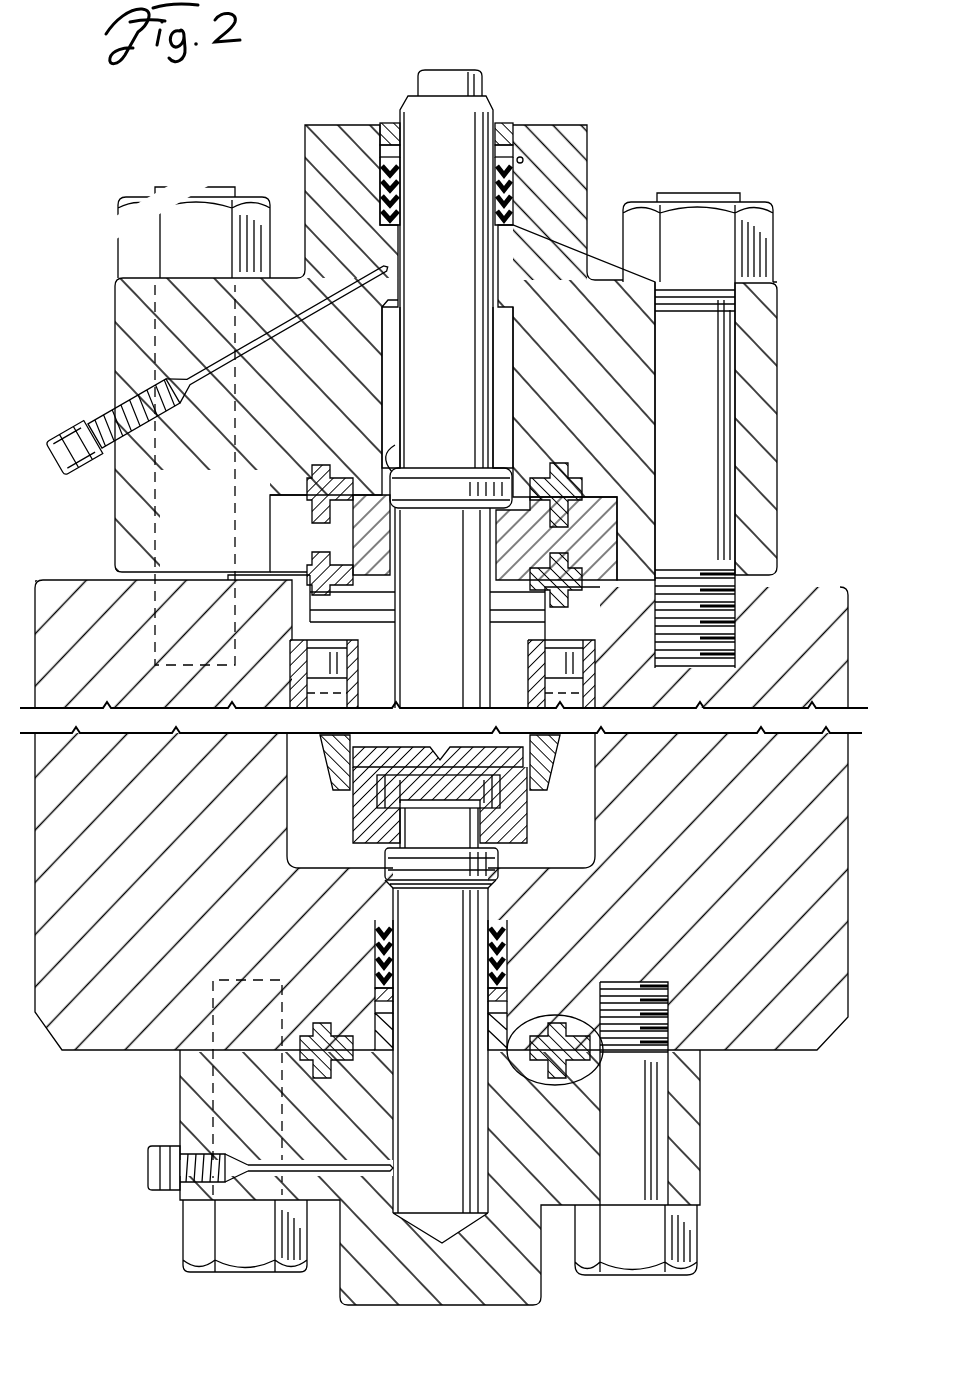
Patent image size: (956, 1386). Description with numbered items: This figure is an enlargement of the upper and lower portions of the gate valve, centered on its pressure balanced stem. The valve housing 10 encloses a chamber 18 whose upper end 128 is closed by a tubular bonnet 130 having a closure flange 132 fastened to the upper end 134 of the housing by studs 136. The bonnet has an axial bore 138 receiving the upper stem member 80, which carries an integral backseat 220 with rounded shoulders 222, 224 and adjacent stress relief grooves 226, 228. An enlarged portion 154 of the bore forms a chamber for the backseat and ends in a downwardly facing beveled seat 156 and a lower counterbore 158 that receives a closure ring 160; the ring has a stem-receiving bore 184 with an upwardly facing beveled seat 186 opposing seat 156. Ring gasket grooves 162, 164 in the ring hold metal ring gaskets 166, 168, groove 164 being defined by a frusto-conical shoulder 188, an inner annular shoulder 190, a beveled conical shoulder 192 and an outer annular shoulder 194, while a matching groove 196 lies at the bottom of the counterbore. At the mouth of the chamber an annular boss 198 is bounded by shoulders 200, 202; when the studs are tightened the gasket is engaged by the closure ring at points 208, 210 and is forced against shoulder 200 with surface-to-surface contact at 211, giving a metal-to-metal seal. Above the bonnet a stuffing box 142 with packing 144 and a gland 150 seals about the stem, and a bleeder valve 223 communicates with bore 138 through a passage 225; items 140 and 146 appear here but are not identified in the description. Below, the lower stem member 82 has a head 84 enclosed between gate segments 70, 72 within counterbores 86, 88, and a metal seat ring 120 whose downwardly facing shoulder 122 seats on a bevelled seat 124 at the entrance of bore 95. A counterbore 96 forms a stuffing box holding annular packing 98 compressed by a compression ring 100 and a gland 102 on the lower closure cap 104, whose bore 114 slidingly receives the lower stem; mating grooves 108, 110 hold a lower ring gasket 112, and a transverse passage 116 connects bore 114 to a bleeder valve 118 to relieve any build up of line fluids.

The valve housing 10 is at (590, 130).
The chamber 18 is at (594, 692).
The gate segment 70 is at (352, 822).
The gate segment 72 is at (518, 768).
The upper stem member 80 is at (455, 205).
The lower stem member 82 is at (455, 1118).
The head 84 is at (498, 790).
The counterbore 86 is at (488, 815).
The counterbore 88 is at (388, 792).
The bore 95 is at (398, 898).
The counterbore 96 is at (388, 1012).
The annular packing 98 is at (385, 942).
The compression ring 100 is at (390, 992).
The gland 102 is at (388, 1030).
The lower closure cap 104 is at (525, 1290).
The annular groove 108 is at (562, 1032).
The annular groove 110 is at (575, 1048).
The lower ring gasket 112 is at (580, 1070).
The bore 114 is at (314, 490).
The transverse passage 116 is at (385, 1171).
The bleeder valve 118 is at (160, 1147).
The metal seat ring 120 is at (500, 858).
The annular shoulder 122 is at (493, 882).
The bevelled seat 124 is at (388, 858).
The upper end of chamber 128 is at (388, 638).
The bonnet 130 is at (556, 206).
The closure flange 132 is at (770, 486).
The upper end of housing 134 is at (798, 586).
The studs 136 is at (762, 241).
The axial bore 138 is at (497, 258).
The O-ring 140 is at (523, 160).
The stuffing box 142 is at (381, 148).
The packing 144 is at (381, 192).
The nut 146 is at (392, 128).
The gland 150 is at (503, 128).
The enlarged portion 154 is at (510, 365).
The beveled shoulder or seat 156 is at (395, 305).
The lower counterbore 158 is at (283, 495).
The closure ring 160 is at (540, 540).
The upper ring gasket groove 162 is at (312, 521).
The lower ring gasket groove 164 is at (335, 546).
The upper metal ring gasket 166 is at (566, 466).
The lower metal ring gasket 168 is at (562, 570).
The stem-receiving bore 184 is at (498, 530).
The beveled conical shoulder or seat 186 is at (508, 450).
The frusto-conical seat or shoulder 188 is at (312, 578).
The inner annular shoulder 190 is at (330, 560).
The beveled conical shoulder 192 is at (336, 556).
The outer annular shoulder 194 is at (498, 600).
The ring gasket groove 196 is at (346, 466).
The annular boss 198 is at (588, 622).
The frusto-conical shoulder or seat 200 is at (582, 590).
The frusto-conical shoulder or seat 202 is at (586, 637).
The engagement point 208 is at (522, 563).
The engagement point 210 is at (546, 556).
The surface-to-surface contact 211 is at (566, 580).
The backseat 220 is at (445, 492).
The rounded shoulder 222 is at (433, 392).
The bleeder valve 223 is at (96, 410).
The rounded shoulder 224 is at (425, 589).
The passage 225 is at (392, 268).
The stress relief groove 226 is at (396, 455).
The stress relief groove 228 is at (398, 518).